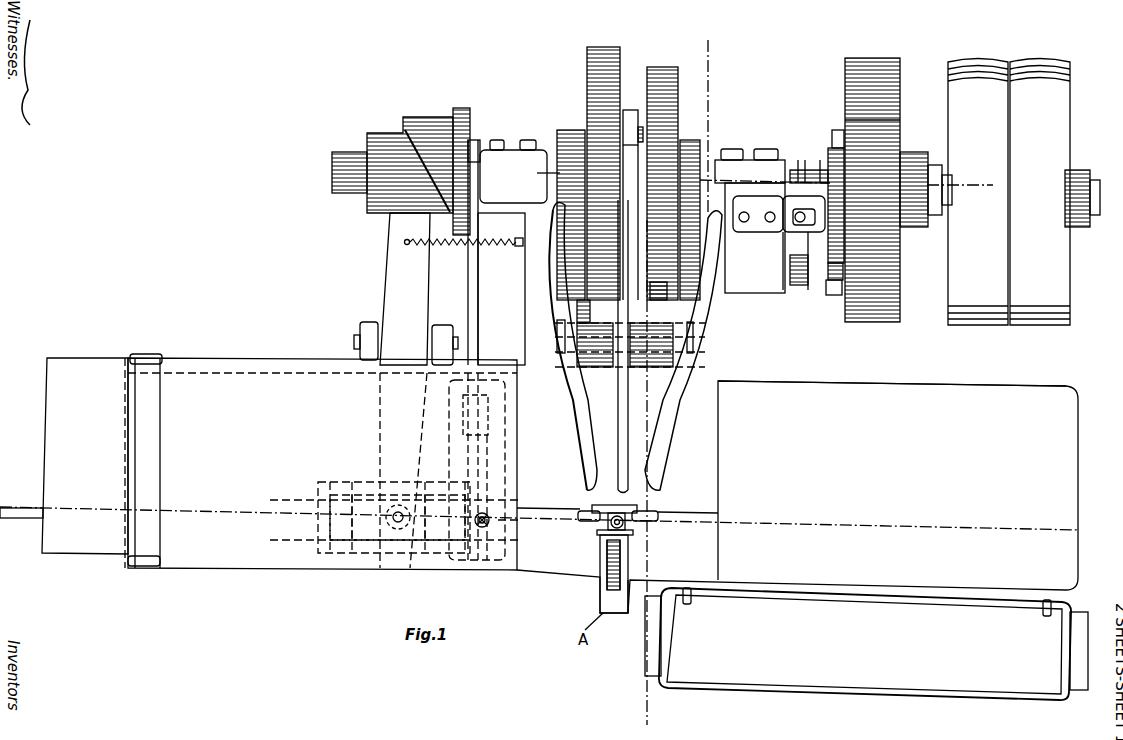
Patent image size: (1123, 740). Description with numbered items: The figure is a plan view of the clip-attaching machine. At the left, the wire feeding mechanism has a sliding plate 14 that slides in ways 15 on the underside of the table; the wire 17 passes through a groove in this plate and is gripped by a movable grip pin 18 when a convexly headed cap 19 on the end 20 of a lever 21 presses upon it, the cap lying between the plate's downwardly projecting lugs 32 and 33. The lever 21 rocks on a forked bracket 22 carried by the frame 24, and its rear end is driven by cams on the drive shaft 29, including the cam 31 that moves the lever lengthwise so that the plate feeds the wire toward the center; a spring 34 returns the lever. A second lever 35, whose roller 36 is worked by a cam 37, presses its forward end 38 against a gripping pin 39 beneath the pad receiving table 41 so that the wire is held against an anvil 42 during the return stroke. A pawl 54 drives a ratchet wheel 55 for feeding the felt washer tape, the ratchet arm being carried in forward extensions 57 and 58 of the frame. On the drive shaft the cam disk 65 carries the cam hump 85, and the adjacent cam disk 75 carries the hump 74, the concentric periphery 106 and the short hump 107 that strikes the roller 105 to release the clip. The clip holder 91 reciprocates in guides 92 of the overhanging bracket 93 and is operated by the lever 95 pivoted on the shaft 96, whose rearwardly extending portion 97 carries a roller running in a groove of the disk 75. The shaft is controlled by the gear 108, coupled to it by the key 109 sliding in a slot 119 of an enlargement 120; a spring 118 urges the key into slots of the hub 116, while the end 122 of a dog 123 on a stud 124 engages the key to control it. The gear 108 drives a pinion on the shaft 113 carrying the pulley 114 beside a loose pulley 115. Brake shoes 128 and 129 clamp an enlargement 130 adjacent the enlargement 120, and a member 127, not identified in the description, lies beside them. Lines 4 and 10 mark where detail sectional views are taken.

The section line 4 is at (718, 46).
The shaft centerline 10 is at (765, 186).
The sliding plate 14 is at (385, 493).
The ways 15 is at (330, 540).
The wire 17 is at (3, 510).
The grip pin 18 is at (400, 520).
The cap 19 is at (420, 500).
The end of lever 20 is at (395, 505).
The lever 21 is at (380, 395).
The forked bracket 22 is at (360, 330).
The frame 24 is at (725, 310).
The drive shaft 29 is at (332, 160).
The cam 31 is at (405, 130).
The lug 32 is at (350, 530).
The lug 33 is at (440, 520).
The spring 34 is at (437, 248).
The lever 35 is at (478, 312).
The roller 36 is at (478, 152).
The cam 37 is at (470, 118).
The forward end 38 is at (498, 525).
The gripping pin 39 is at (483, 532).
The pad receiving table 41 is at (720, 383).
The anvil 42 is at (490, 513).
The pawl 54 is at (625, 575).
The ratchet wheel 55 is at (607, 545).
The forward extension 57 is at (600, 590).
The forward extension 58 is at (630, 612).
The cam disk 65 is at (660, 70).
The hump 74 is at (580, 150).
The cam disk 75 is at (592, 52).
The cam hump 85 is at (668, 292).
The clip holder 91 is at (640, 525).
The guides 92 is at (588, 513).
The overhanging bracket 93 is at (665, 425).
The lever 95 is at (621, 405).
The shaft 96 is at (688, 352).
The rearwardly extending portion 97 is at (632, 195).
The roller 105 is at (558, 275).
The concentric periphery 106 is at (580, 250).
The hump 107 is at (520, 171).
The gear 108 is at (862, 322).
The key 109 is at (812, 175).
The shaft 113 is at (1092, 222).
The pulley 114 is at (945, 330).
The loose pulley 115 is at (1040, 325).
The hub 116 is at (905, 165).
The spring 118 is at (799, 172).
The slot 119 is at (805, 175).
The enlargement 120 is at (795, 168).
The end of dog 122 is at (821, 185).
The dog 123 is at (836, 280).
The stud 124 is at (840, 296).
The plate 127 is at (773, 234).
The brake shoe 128 is at (798, 262).
The brake shoe 129 is at (832, 140).
The enlargement 130 is at (850, 160).